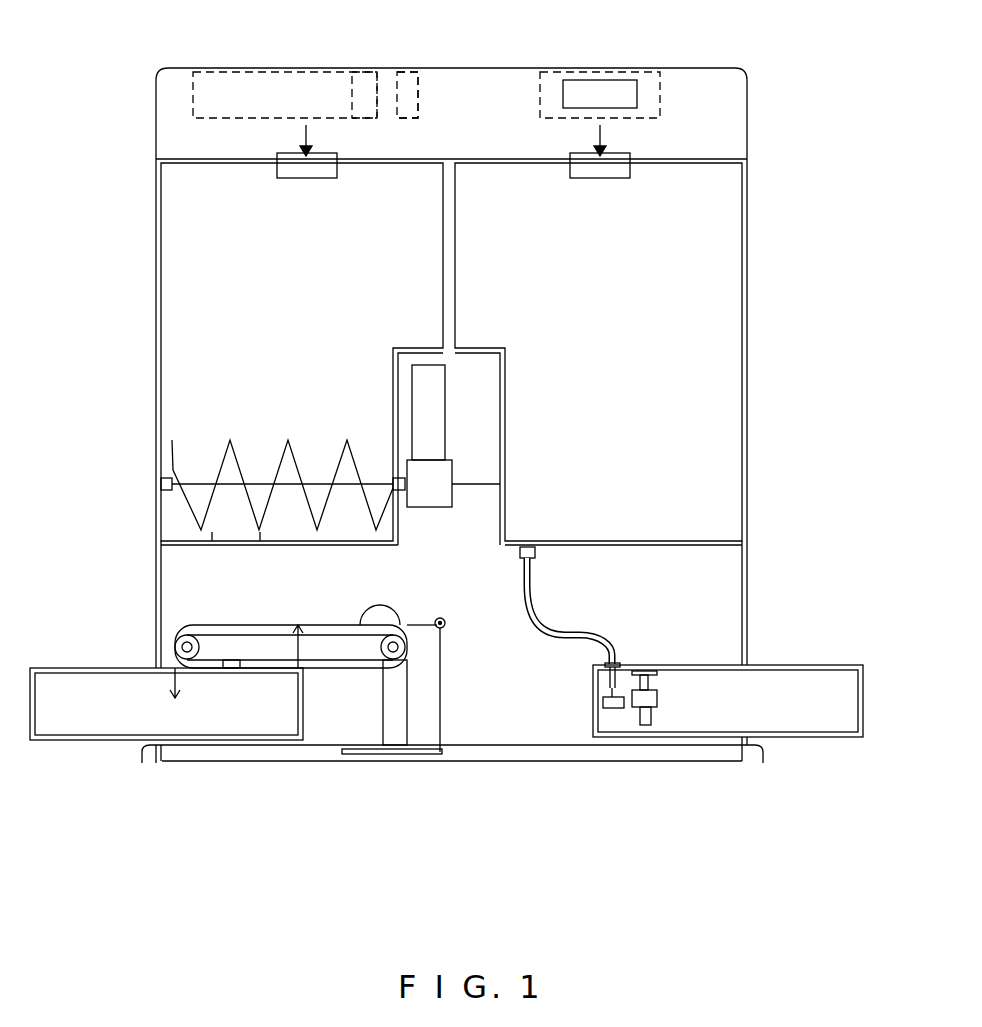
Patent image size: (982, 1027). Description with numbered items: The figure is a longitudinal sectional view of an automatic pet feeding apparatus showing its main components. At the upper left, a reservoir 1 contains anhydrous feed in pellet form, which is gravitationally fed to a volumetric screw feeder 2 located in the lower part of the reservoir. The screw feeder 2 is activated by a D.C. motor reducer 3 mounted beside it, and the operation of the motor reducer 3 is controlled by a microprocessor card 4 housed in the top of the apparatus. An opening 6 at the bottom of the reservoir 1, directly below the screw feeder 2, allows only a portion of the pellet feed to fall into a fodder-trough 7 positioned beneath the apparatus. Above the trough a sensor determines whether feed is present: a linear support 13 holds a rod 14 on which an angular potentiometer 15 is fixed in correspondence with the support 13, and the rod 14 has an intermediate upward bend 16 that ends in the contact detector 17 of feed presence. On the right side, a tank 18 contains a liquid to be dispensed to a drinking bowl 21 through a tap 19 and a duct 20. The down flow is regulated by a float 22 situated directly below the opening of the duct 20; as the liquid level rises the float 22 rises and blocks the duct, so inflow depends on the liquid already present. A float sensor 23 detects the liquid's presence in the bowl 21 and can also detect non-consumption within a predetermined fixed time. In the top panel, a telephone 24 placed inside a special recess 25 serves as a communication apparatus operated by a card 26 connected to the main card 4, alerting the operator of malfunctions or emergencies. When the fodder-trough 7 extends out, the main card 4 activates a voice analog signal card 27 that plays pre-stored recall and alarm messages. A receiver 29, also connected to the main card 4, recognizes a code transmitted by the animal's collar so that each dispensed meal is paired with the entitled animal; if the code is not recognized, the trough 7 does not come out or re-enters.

The reservoir 1 is at (175, 280).
The volumetric screw feeder 2 is at (295, 458).
The D.C. motor reducer 3 is at (432, 425).
The microprocessor card 4 is at (253, 90).
The opening 6 is at (248, 546).
The fodder-trough 7 is at (255, 727).
The linear support 13 is at (442, 720).
The rod 14 is at (223, 623).
The angular potentiometer 15 is at (443, 630).
The intermediate upward bend 16 is at (392, 605).
The contact detector 17 is at (172, 697).
The tank 18 is at (717, 315).
The tap 19 is at (528, 543).
The duct 20 is at (553, 620).
The drinking bowl 21 is at (773, 678).
The float 22 is at (603, 703).
The float sensor 23 is at (657, 700).
The telephone 24 is at (578, 92).
The special recess 25 is at (647, 78).
The card 26 is at (362, 88).
The voice analog signal card 27 is at (390, 82).
The receiver 29 is at (407, 82).